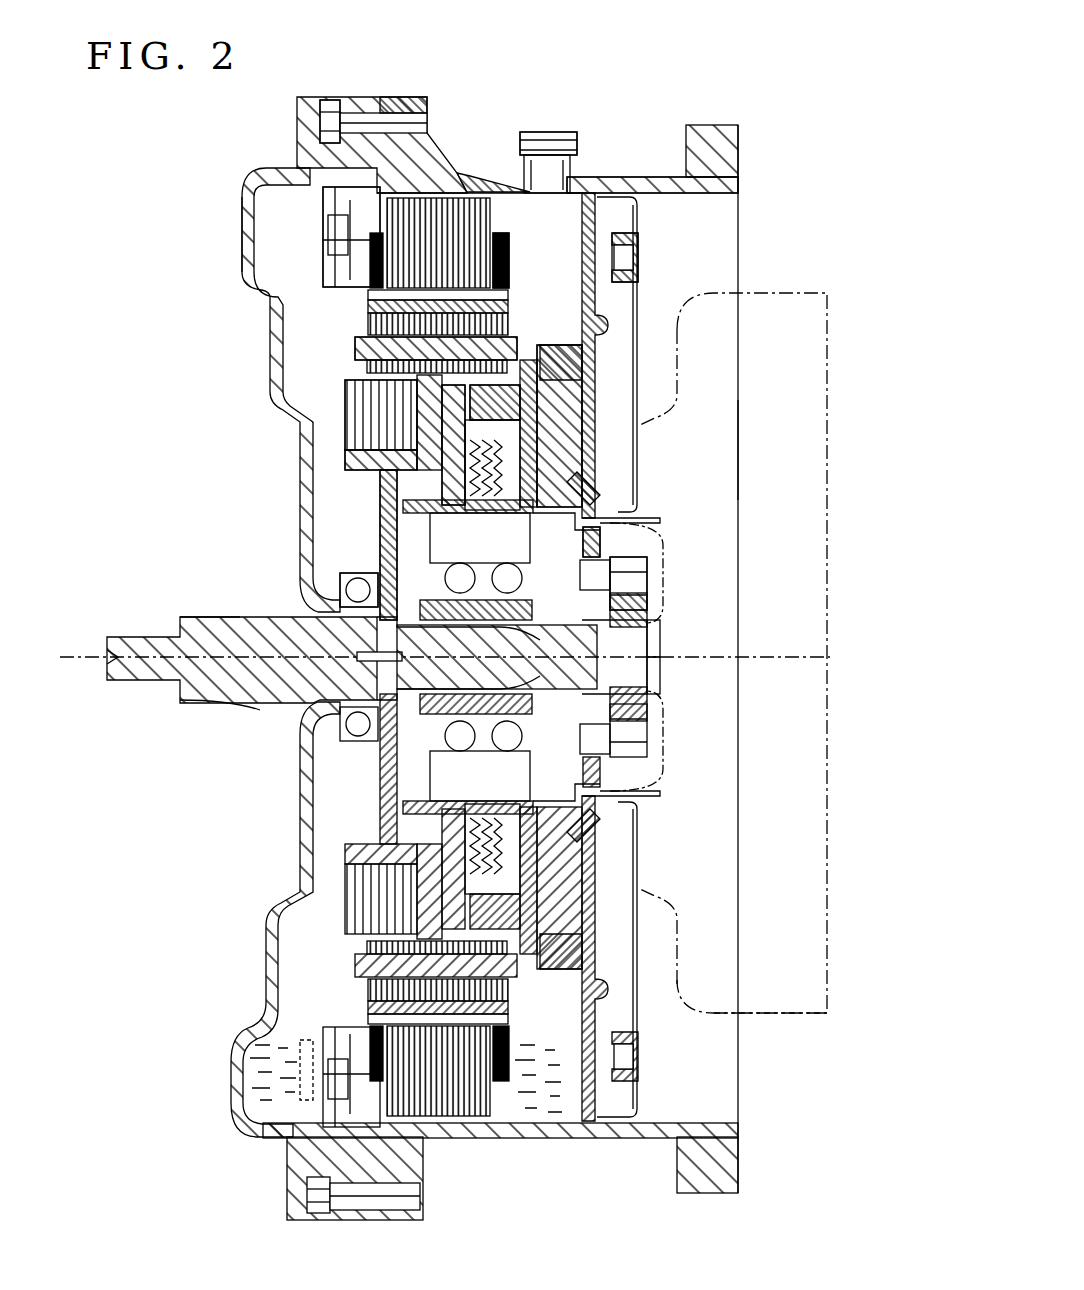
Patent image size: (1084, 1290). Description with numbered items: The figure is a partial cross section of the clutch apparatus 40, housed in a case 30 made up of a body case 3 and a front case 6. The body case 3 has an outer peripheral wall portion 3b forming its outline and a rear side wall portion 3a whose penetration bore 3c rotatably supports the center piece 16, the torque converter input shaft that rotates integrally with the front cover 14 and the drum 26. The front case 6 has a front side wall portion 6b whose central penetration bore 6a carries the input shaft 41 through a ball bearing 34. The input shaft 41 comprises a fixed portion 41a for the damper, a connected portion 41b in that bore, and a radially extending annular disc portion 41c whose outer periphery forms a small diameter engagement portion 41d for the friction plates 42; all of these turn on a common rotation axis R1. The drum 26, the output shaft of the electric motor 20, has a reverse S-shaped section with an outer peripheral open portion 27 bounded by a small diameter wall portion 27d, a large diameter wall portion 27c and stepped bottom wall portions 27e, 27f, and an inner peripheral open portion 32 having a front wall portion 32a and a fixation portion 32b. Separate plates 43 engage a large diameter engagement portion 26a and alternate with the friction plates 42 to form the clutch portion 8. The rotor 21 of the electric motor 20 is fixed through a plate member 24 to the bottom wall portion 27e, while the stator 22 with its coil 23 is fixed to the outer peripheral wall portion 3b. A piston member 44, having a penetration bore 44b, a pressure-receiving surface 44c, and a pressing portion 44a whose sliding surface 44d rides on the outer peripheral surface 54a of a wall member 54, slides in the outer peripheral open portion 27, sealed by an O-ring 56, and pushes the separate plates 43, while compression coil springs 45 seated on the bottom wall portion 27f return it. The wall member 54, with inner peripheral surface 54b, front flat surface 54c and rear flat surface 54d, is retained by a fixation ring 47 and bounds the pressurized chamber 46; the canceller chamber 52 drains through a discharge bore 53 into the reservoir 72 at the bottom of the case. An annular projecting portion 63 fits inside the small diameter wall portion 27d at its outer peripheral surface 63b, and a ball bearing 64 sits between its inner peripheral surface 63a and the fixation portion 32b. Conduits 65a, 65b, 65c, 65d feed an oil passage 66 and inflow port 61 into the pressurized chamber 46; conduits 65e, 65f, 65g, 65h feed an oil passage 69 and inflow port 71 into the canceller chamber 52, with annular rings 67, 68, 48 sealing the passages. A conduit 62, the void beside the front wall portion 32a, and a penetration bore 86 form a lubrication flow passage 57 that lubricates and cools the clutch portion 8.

The body case 3 is at (437, 155).
The rear side wall portion 3a is at (620, 205).
The outer peripheral wall portion 3b is at (500, 175).
The penetration bore 3c is at (625, 628).
The front case 6 is at (345, 130).
The penetration bore 6a is at (305, 735).
The front side wall portion 6b is at (240, 277).
The clutch portion 8 is at (330, 405).
The front cover 14 is at (745, 1020).
The center piece 16 is at (565, 705).
The electric motor 20 is at (470, 176).
The rotor 21 is at (350, 290).
The stator 22 is at (560, 180).
The coil 23 is at (512, 245).
The plate member 24 is at (580, 295).
The drum 26 is at (585, 405).
The large diameter engagement portion 26a is at (290, 360).
The outer peripheral open portion 27 is at (500, 340).
The large diameter wall portion 27c is at (505, 305).
The small diameter wall portion 27d is at (625, 500).
The bottom wall portion 27e is at (600, 340).
The bottom wall portion 27f is at (600, 440).
The case 30 is at (462, 50).
The inner peripheral open portion 32 is at (380, 560).
The front wall portion 32a is at (400, 578).
The fixation portion 32b is at (620, 672).
The ball bearing 34 is at (340, 595).
The clutch apparatus 40 is at (250, 962).
The input shaft 41 is at (185, 705).
The fixed portion 41a is at (200, 608).
The connected portion 41b is at (300, 718).
The annular disc portion 41c is at (375, 503).
The small diameter engagement portion 41d is at (345, 440).
The friction plates 42 is at (345, 425).
The separate plates 43 is at (390, 380).
The piston member 44 is at (640, 404).
The pressing portion 44a is at (330, 907).
The penetration bore 44b is at (560, 842).
The pressure-receiving surface 44c is at (380, 842).
The sliding surface 44d is at (265, 270).
The compression coil spring 45 is at (505, 452).
The pressurized chamber 46 is at (360, 468).
The fixation ring 47 is at (340, 832).
The annular ring 48 is at (660, 520).
The canceller chamber 52 is at (600, 922).
The discharge bore 53 is at (600, 886).
The wall member 54 is at (340, 455).
The outer peripheral surface 54a is at (345, 884).
The inner peripheral surface 54b is at (380, 802).
The front flat surface 54c is at (360, 860).
The rear flat surface 54d is at (600, 905).
The O-ring 56 is at (400, 350).
The lubrication flow passage 57 is at (330, 482).
The inflow port 61 is at (380, 782).
The conduit 62 is at (580, 382).
The projecting portion 63 is at (632, 592).
The inner peripheral surface 63a is at (505, 650).
The outer peripheral surface 63b is at (610, 565).
The ball bearing 64 is at (618, 645).
The conduit 65a is at (580, 956).
The conduit 65b is at (560, 810).
The conduit 65c is at (640, 760).
The conduit 65d is at (640, 718).
The conduit 65e is at (570, 976).
The conduit 65f is at (650, 796).
The conduit 65g is at (735, 743).
The conduit 65h is at (660, 800).
The oil passage 66 is at (380, 787).
The annular ring 67 is at (400, 548).
The annular ring 68 is at (630, 522).
The oil passage 69 is at (340, 765).
The inflow port 71 is at (600, 832).
The reservoir 72 is at (548, 1085).
The penetration bore 86 is at (400, 515).
The rotation axis R1 is at (768, 642).